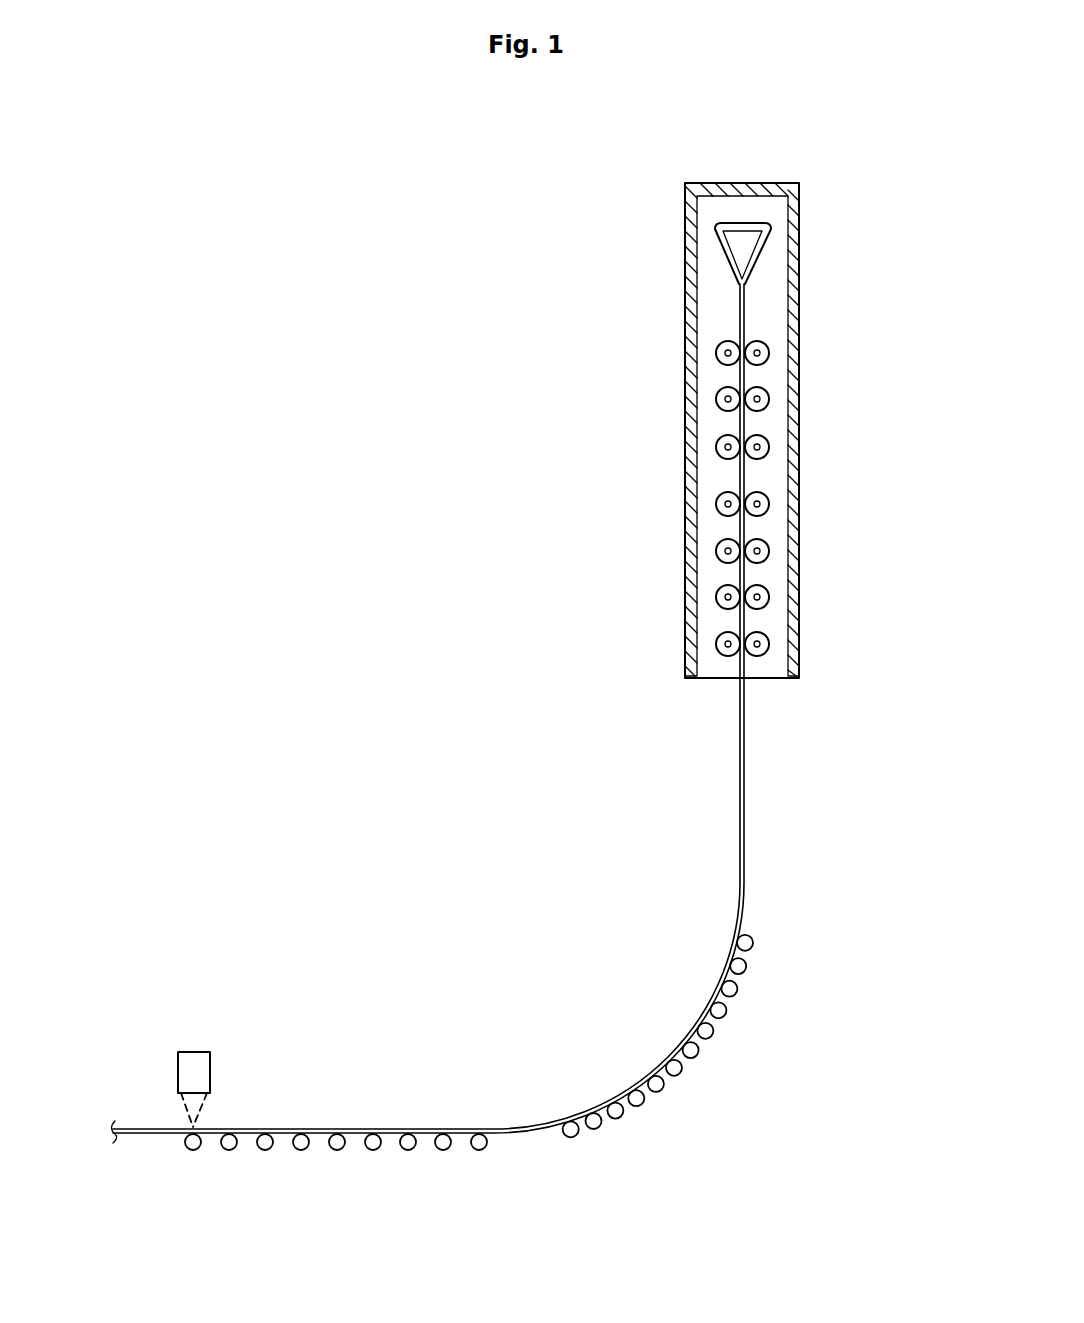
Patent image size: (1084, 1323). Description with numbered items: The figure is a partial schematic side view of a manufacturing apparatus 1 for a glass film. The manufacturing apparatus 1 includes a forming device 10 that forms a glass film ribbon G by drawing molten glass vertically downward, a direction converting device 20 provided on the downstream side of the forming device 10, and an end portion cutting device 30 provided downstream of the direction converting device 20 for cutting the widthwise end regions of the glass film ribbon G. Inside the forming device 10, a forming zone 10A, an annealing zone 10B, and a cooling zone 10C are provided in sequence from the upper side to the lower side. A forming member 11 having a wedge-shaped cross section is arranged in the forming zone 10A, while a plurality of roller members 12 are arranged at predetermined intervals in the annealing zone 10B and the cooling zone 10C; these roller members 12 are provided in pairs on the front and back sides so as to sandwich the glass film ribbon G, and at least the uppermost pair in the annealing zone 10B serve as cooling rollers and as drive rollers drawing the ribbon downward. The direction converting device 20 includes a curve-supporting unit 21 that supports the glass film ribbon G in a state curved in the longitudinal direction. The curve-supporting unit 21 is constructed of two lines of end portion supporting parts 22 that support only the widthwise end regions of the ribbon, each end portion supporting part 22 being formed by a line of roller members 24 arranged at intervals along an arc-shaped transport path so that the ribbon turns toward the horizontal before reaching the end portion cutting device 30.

The manufacturing apparatus 1 is at (390, 433).
The forming device 10 is at (862, 193).
The forming zone 10A is at (809, 196).
The annealing zone 10B is at (809, 333).
The cooling zone 10C is at (809, 470).
The forming member 11 is at (735, 246).
The roller members 12 is at (716, 447).
The glass film ribbon G is at (740, 813).
The direction converting device 20 is at (628, 1055).
The curve-supporting unit 21 is at (728, 1018).
The end portion supporting parts 22 is at (469, 1054).
The roller members 24 is at (656, 1093).
The end portion cutting device 30 is at (220, 1067).